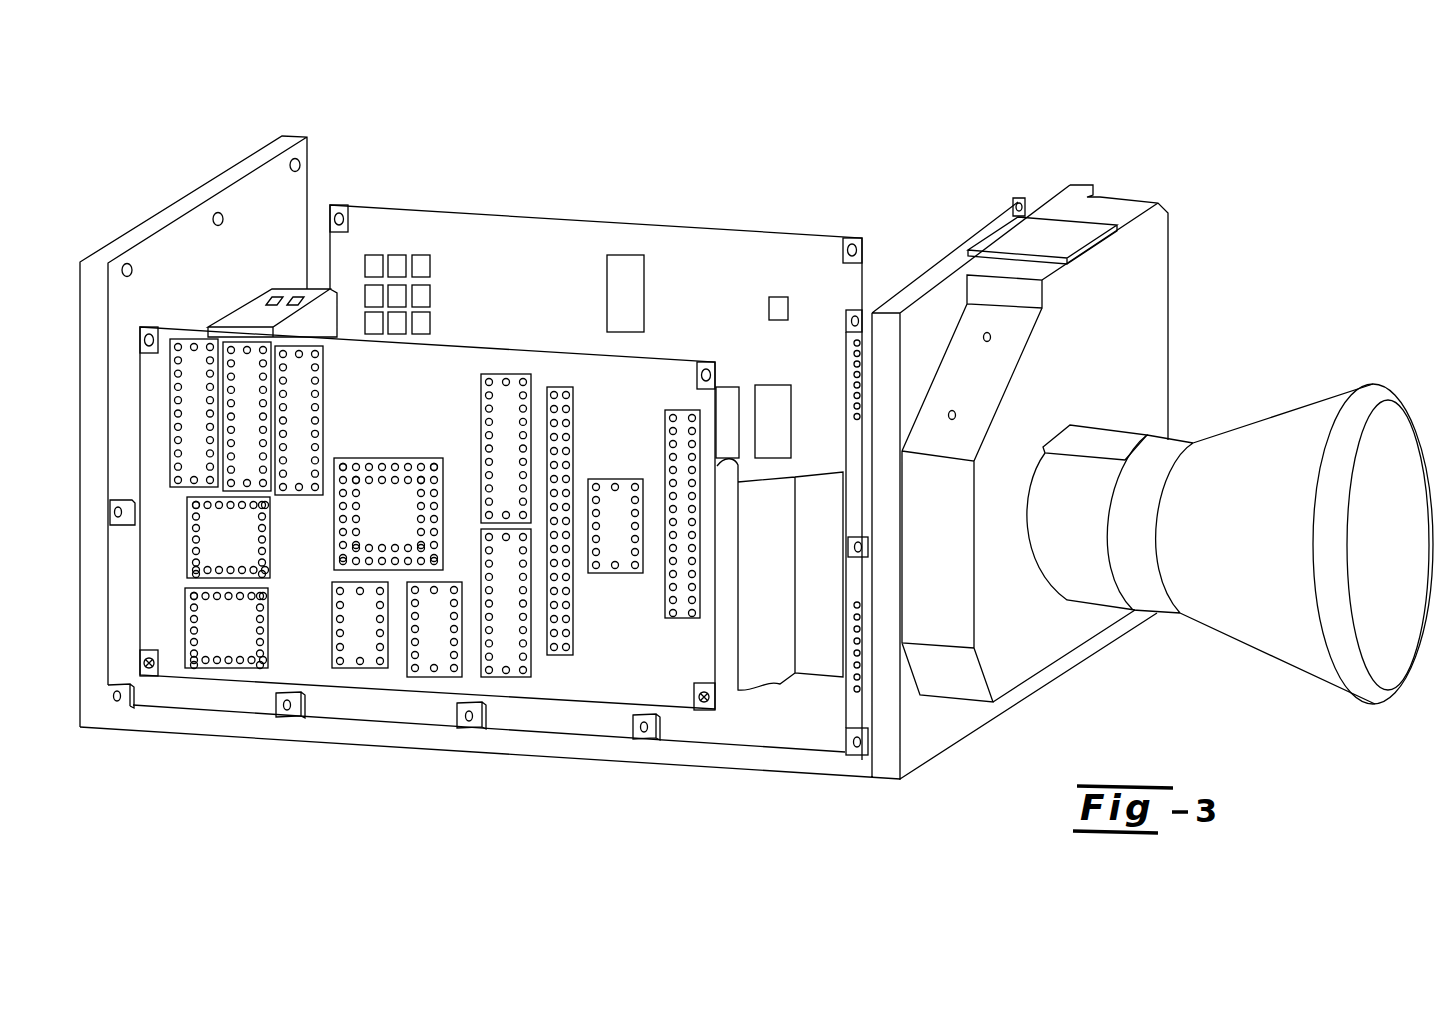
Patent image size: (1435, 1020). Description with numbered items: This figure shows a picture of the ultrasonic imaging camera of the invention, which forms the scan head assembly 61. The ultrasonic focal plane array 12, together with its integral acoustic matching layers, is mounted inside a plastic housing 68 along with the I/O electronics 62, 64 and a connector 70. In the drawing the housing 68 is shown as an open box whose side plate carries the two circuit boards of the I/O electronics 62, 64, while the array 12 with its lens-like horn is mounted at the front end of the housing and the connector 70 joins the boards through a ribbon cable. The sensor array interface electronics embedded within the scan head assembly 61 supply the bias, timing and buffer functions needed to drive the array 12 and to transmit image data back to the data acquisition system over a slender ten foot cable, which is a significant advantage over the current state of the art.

The ultrasonic focal plane array 12 is at (982, 218).
The scan head assembly 61 is at (1282, 229).
The I/O electronics 62 is at (757, 230).
The I/O electronics 64 is at (508, 345).
The plastic housing 68 is at (287, 138).
The connector 70 is at (772, 688).